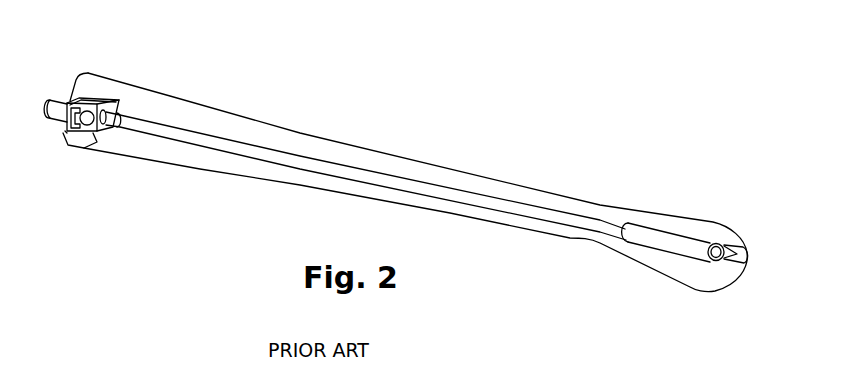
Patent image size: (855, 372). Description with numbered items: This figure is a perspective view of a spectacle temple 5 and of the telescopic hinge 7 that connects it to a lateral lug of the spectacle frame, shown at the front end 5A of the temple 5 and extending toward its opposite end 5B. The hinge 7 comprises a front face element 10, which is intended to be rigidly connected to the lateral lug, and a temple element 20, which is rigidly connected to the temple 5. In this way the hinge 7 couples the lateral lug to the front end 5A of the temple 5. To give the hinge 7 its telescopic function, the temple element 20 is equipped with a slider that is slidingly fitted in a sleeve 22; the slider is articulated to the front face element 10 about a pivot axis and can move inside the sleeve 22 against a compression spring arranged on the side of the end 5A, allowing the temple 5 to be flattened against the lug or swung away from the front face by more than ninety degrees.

The temple 5 is at (238, 130).
The front end of the temple 5A is at (93, 100).
The second end of wiper arm 5B is at (702, 232).
The hinge 7 is at (60, 137).
The front face element 10 is at (58, 112).
The temple element 20 is at (100, 101).
The sleeve 22 is at (158, 128).